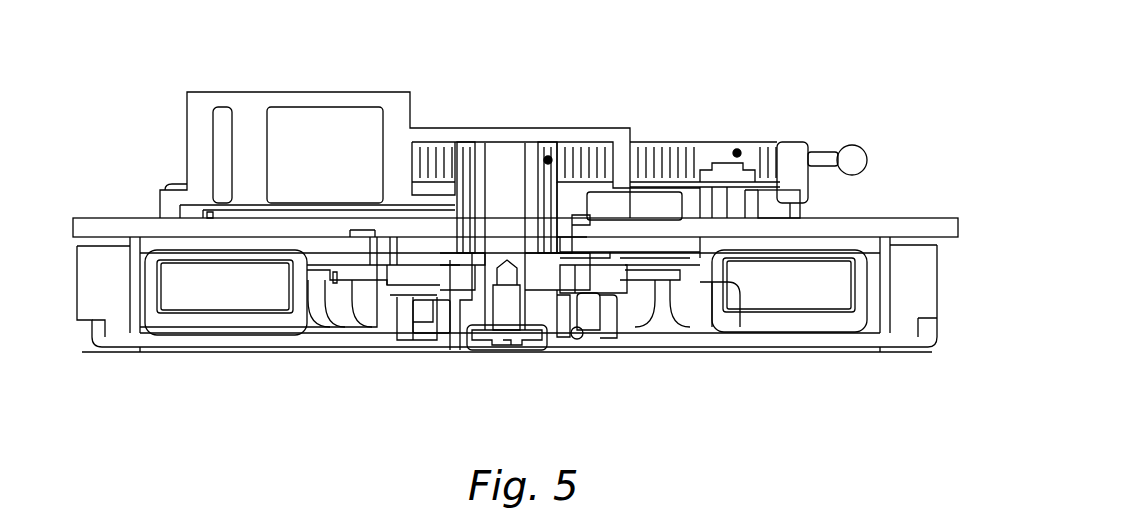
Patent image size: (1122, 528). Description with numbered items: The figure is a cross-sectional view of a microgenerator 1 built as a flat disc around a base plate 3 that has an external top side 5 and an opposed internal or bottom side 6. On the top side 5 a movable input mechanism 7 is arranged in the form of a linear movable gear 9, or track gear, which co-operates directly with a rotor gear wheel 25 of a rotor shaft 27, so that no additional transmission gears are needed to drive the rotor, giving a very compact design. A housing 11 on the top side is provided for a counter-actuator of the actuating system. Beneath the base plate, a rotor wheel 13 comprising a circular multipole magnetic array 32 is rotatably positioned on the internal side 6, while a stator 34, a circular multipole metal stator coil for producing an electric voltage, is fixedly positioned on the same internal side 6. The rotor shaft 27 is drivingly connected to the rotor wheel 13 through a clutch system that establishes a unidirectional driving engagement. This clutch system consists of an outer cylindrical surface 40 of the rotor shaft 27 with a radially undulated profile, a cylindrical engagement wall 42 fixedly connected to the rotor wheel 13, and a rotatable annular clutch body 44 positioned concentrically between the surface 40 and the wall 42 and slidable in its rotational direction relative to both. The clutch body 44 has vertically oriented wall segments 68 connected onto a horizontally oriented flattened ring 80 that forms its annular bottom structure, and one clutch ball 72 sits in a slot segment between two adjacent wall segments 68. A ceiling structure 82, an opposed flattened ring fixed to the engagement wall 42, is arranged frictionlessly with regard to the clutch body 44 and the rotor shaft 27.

The microgenerator 1 is at (858, 76).
The base plate 3 is at (109, 228).
The top side 5 is at (128, 117).
The internal side 6 is at (950, 245).
The movable input mechanism 7 is at (614, 118).
The linear movable gear 9 is at (738, 148).
The housing 11 is at (395, 101).
The rotor wheel 13 is at (280, 352).
The rotor gear wheel 25 is at (549, 156).
The rotor shaft 27 is at (462, 305).
The circular multipole magnetic array 32 is at (912, 283).
The stator 34 is at (788, 283).
The outer cylindrical surface 40 is at (572, 310).
The cylindrical engagement wall 42 is at (627, 307).
The clutch body 44 is at (607, 315).
The wall segments 68 is at (405, 313).
The clutch ball 72 is at (588, 313).
The flattened ring 80 is at (427, 337).
The ceiling structure 82 is at (385, 279).